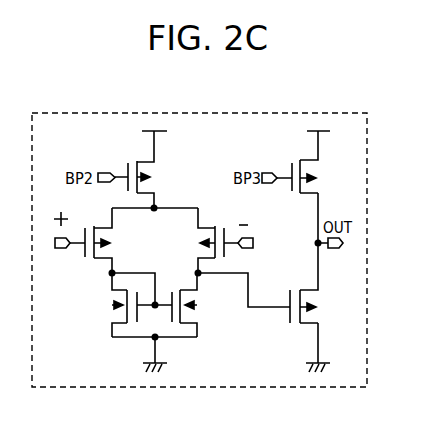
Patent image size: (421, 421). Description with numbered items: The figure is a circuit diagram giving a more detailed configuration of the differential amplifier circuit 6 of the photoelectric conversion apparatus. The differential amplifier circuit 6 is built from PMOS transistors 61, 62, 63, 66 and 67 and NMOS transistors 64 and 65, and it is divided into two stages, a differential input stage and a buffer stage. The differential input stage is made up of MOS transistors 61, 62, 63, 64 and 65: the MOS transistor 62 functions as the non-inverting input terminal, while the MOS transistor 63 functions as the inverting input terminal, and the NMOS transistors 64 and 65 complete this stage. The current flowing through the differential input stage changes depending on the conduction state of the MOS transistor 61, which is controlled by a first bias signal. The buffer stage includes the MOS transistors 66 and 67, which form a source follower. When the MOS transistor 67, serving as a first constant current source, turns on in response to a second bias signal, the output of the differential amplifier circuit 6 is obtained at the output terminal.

The differential amplifier circuit 6 is at (147, 112).
The MOS transistor 61 is at (152, 173).
The MOS transistor 62 is at (92, 259).
The MOS transistor 63 is at (223, 225).
The NMOS transistor 64 is at (108, 318).
The NMOS transistor 65 is at (200, 319).
The MOS transistor 66 is at (286, 321).
The MOS transistor 67 is at (289, 162).